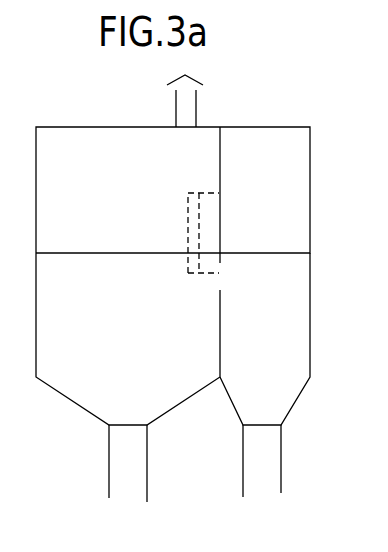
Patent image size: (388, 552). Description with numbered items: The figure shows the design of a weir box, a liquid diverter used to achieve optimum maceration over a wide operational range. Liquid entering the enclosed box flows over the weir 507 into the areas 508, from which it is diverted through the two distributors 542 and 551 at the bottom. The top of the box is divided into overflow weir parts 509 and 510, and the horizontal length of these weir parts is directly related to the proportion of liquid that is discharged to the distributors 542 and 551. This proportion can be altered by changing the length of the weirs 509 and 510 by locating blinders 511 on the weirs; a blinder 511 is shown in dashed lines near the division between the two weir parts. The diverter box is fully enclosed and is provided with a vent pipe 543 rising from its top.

The weir 507 is at (72, 385).
The areas 508 is at (310, 352).
The overflow weir part 509 is at (297, 253).
The overflow weir part 510 is at (111, 253).
The blinder 511 is at (200, 194).
The distributor 542 is at (250, 467).
The vent pipe 543 is at (176, 108).
The distributor 551 is at (115, 462).